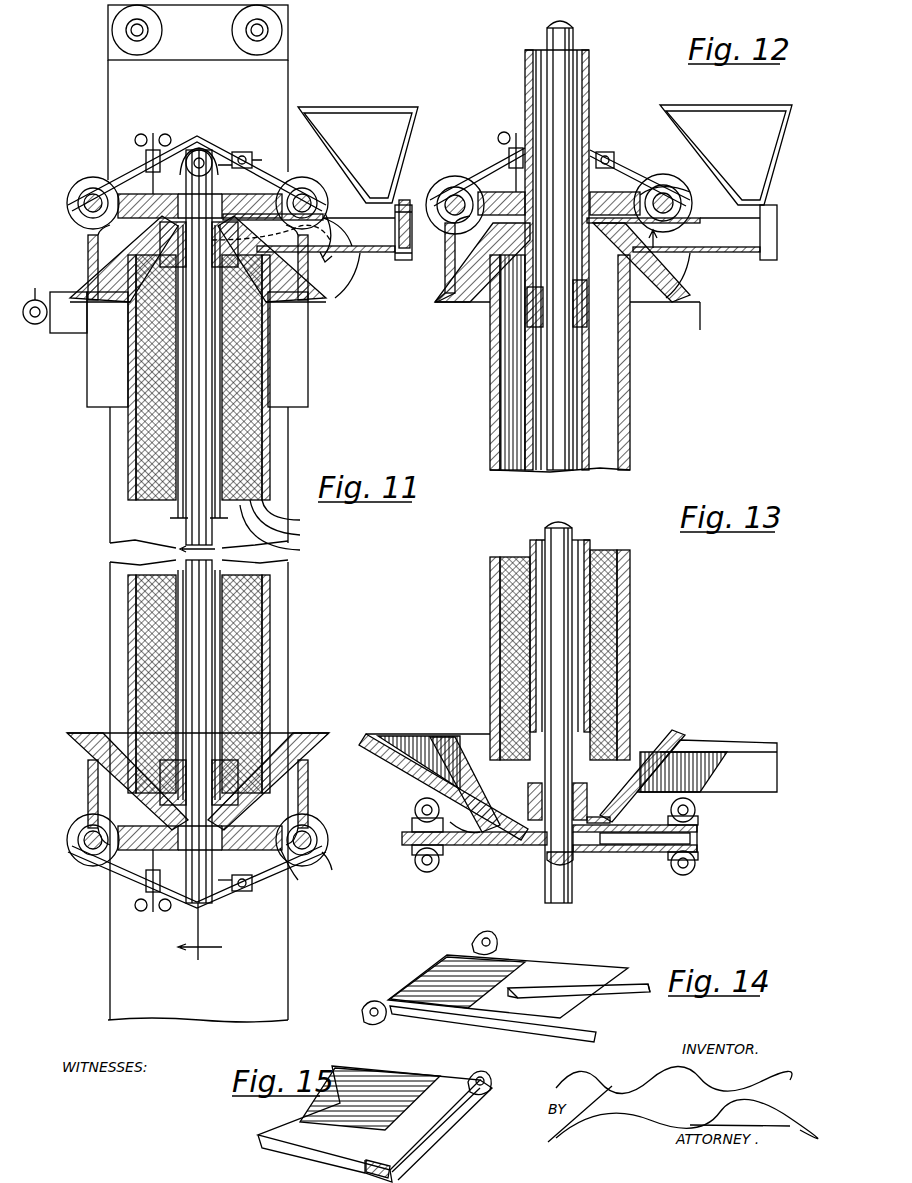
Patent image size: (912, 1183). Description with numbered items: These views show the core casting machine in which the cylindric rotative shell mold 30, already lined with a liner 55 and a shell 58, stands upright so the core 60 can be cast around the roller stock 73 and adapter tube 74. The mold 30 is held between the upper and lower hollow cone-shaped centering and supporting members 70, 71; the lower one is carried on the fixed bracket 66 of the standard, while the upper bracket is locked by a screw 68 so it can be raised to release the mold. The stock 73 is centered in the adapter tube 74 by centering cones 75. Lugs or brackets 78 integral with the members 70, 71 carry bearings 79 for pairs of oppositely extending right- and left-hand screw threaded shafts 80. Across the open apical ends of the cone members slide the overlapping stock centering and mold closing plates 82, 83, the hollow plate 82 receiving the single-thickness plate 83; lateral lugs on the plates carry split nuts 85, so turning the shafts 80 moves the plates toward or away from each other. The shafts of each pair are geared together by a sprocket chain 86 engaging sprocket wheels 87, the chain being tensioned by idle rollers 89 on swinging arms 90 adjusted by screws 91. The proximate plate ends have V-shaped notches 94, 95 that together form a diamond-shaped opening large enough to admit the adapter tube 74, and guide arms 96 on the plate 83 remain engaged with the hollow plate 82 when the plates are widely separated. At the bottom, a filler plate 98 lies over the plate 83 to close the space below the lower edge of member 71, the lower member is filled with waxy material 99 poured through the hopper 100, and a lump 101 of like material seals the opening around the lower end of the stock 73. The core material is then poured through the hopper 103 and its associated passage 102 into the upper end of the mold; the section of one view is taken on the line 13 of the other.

In FIG. 11, the section line 13— 13 is at (216, 549).
In FIG. 11, the cylindric rotative shell mold 30 is at (266, 455).
In FIG. 12, the cylindric rotative shell mold 30 is at (630, 402).
In FIG. 13, the cylindric rotative shell mold 30 is at (630, 592).
In FIG. 11, the liner 55 is at (300, 520).
In FIG. 13, the liner 55 is at (620, 548).
In FIG. 11, the shell 58 is at (300, 535).
In FIG. 13, the shell 58 is at (626, 552).
In FIG. 11, the core 60 is at (300, 550).
In FIG. 13, the core 60 is at (600, 546).
In FIG. 13, the fixed bracket 66 is at (722, 743).
In FIG. 11, the screw 68 is at (35, 299).
In FIG. 11, the upper mold centering and supporting member 70 is at (315, 300).
In FIG. 12, the upper mold centering and supporting member 70 is at (465, 305).
In FIG. 11, the lower mold centering and supporting member 71 is at (300, 740).
In FIG. 12, the lower mold centering and supporting member 71 is at (562, 262).
In FIG. 13, the lower mold centering and supporting member 71 is at (676, 732).
In FIG. 11, the roller stock 73 is at (190, 315).
In FIG. 12, the roller stock 73 is at (575, 30).
In FIG. 13, the roller stock 73 is at (566, 900).
In FIG. 11, the adapter tube 74 is at (130, 395).
In FIG. 12, the adapter tube 74 is at (591, 88).
In FIG. 13, the adapter tube 74 is at (531, 545).
In FIG. 11, the centering cones 75 is at (130, 312).
In FIG. 12, the centering cones 75 is at (590, 328).
In FIG. 13, the centering cones 75 is at (535, 842).
In FIG. 11, the lugs or brackets 78 is at (90, 250).
In FIG. 12, the lugs or brackets 78 is at (446, 270).
In FIG. 11, the bearings 79 is at (78, 207).
In FIG. 12, the bearings 79 is at (444, 188).
In FIG. 11, the screw threaded shafts 80 is at (86, 201).
In FIG. 12, the screw threaded shafts 80 is at (456, 188).
In FIG. 14, the screw threaded shafts 80 is at (460, 955).
In FIG. 11, the hollow stock centering and mold closing plate 82 is at (128, 192).
In FIG. 12, the hollow stock centering and mold closing plate 82 is at (477, 177).
In FIG. 13, the hollow stock centering and mold closing plate 82 is at (665, 862).
In FIG. 15, the hollow stock centering and mold closing plate 82 is at (416, 1090).
In FIG. 11, the single thickness stock centering and mold closing plate 83 is at (130, 205).
In FIG. 12, the single thickness stock centering and mold closing plate 83 is at (626, 205).
In FIG. 13, the single thickness stock centering and mold closing plate 83 is at (470, 847).
In FIG. 14, the single thickness stock centering and mold closing plate 83 is at (542, 968).
In FIG. 13, the split nuts 85 is at (420, 862).
In FIG. 14, the split nuts 85 is at (496, 946).
In FIG. 15, the split nuts 85 is at (494, 1082).
In FIG. 11, the sprocket chain 86 is at (298, 880).
In FIG. 12, the sprocket chain 86 is at (618, 160).
In FIG. 11, the sprocket wheels 87 is at (330, 862).
In FIG. 12, the sprocket wheels 87 is at (660, 180).
In FIG. 11, the idle rollers 89 is at (195, 145).
In FIG. 11, the swinging arms 90 is at (228, 157).
In FIG. 11, the screws 91 is at (152, 135).
In FIG. 12, the screws 91 is at (514, 138).
In FIG. 15, the V-shaped notch 94 is at (320, 1117).
In FIG. 14, the V-shaped notch 95 is at (600, 985).
In FIG. 13, the guide arms 96 is at (700, 841).
In FIG. 14, the guide arms 96 is at (606, 1030).
In FIG. 13, the filler plate 98 is at (455, 822).
In FIG. 13, the waxy material 99 is at (452, 740).
In FIG. 13, the hopper 100 is at (410, 740).
In FIG. 13, the lump of waxy material 101 is at (570, 855).
In FIG. 11, the discharge pipe 102 is at (338, 255).
In FIG. 12, the discharge pipe 102 is at (646, 300).
In FIG. 11, the hopper 103 is at (415, 112).
In FIG. 12, the hopper 103 is at (752, 122).